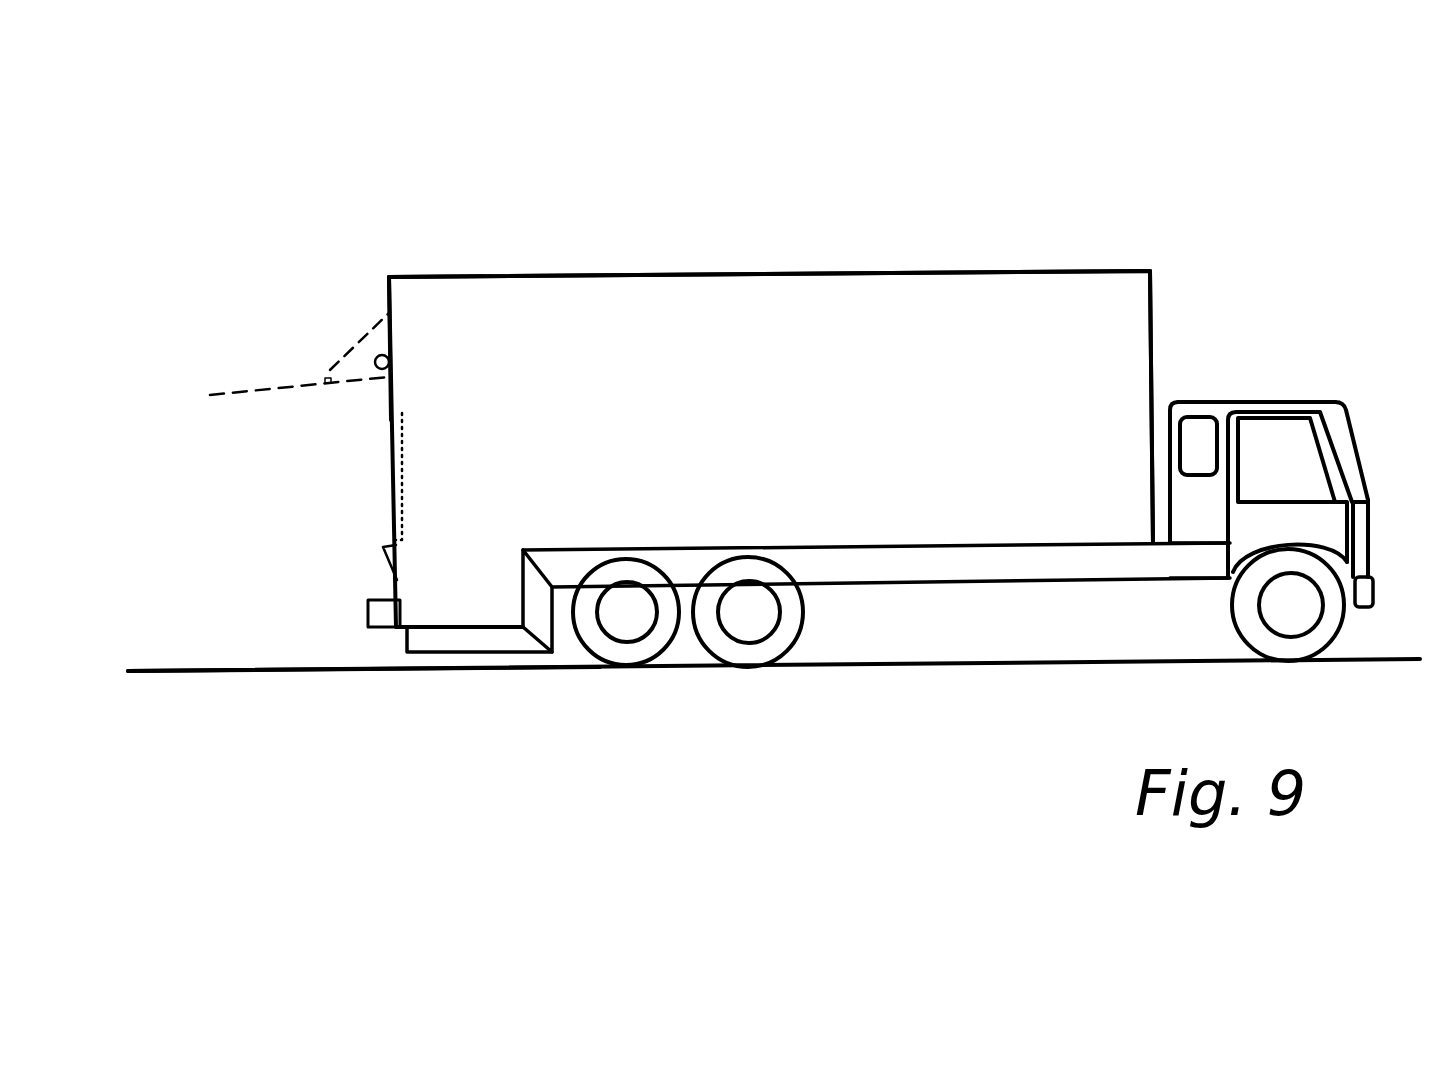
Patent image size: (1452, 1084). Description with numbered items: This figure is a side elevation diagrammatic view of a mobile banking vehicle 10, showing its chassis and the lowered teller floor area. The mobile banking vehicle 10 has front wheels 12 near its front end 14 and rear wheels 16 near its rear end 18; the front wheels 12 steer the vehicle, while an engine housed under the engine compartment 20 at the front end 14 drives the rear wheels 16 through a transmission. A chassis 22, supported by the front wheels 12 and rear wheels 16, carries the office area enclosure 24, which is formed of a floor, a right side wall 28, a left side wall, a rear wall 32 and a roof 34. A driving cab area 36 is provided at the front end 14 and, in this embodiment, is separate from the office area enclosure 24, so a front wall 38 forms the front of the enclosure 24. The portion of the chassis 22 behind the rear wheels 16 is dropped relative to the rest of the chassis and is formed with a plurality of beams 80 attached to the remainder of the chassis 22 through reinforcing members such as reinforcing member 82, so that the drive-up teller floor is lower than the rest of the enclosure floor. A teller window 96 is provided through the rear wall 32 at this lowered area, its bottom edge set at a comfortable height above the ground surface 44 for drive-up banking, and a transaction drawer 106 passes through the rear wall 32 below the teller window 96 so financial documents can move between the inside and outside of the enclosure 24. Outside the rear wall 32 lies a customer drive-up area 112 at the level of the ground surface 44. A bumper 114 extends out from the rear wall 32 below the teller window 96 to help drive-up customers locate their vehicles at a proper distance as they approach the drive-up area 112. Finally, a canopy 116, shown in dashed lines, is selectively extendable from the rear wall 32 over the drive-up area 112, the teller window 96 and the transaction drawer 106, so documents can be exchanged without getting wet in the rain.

The mobile banking vehicle 10 is at (1210, 297).
The front wheels 12 is at (1323, 632).
The front end 14 is at (1353, 398).
The rear wheels 16 is at (747, 648).
The rear end 18 is at (328, 350).
The engine compartment 20 is at (1373, 520).
The chassis 22 is at (818, 643).
The office area enclosure 24 is at (1005, 262).
The right side wall 28 is at (662, 342).
The rear wall 32 is at (388, 305).
The roof 34 is at (727, 270).
The driving cab area 36 is at (1277, 402).
The front wall 38 is at (1155, 350).
The ground surface 44 is at (1392, 657).
The beams 80 is at (477, 652).
The reinforcing member 82 is at (537, 615).
The teller window 96 is at (392, 500).
The transaction drawer 106 is at (383, 558).
The drive-up area 112 is at (248, 667).
The bumper 114 is at (367, 614).
The canopy 116 is at (255, 390).